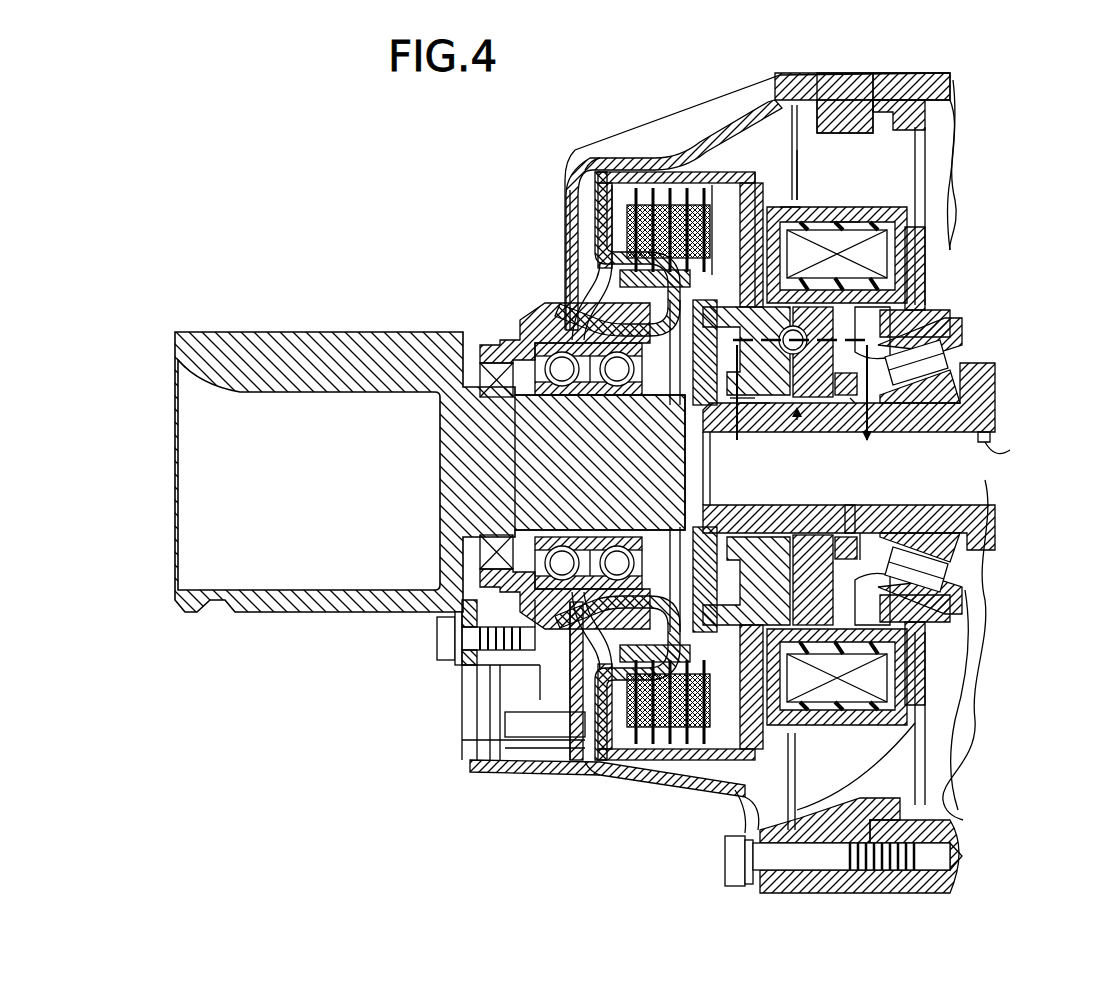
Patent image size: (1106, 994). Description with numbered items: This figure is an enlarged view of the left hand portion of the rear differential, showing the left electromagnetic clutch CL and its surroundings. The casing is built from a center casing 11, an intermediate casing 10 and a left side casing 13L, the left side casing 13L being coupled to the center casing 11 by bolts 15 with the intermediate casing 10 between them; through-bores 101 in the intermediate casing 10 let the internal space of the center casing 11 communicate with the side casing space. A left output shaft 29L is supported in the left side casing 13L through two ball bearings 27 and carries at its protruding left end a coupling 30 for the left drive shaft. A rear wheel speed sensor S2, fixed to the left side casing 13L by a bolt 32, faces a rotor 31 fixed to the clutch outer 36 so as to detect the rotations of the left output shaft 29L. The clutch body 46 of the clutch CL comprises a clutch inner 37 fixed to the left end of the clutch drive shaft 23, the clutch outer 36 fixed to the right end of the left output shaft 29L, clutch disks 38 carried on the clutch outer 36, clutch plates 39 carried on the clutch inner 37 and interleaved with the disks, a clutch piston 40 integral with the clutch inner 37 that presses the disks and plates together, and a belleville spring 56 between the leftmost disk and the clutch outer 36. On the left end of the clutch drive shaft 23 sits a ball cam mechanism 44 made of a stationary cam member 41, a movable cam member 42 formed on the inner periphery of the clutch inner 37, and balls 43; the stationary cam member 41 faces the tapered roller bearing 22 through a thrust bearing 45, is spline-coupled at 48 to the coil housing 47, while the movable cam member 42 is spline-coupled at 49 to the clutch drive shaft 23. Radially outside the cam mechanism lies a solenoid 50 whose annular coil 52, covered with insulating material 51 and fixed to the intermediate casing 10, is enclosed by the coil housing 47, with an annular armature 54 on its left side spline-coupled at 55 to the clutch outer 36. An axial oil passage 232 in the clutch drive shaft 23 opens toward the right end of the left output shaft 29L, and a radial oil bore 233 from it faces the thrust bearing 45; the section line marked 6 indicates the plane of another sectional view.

The coupling 30 is at (333, 333).
The left output shaft 29L is at (590, 479).
The ball bearing 27 is at (540, 325).
The clutch inner 37 is at (640, 268).
The clutch plate 39 is at (706, 292).
The left side casing 13L is at (690, 100).
The intermediate casing 10 is at (840, 75).
The center casing 11 is at (903, 85).
The through-bore 101 is at (935, 220).
The armature 54 is at (768, 200).
The spline coupling 55 is at (740, 182).
The clutch piston 40 is at (714, 183).
The clutch outer 36 is at (636, 185).
The clutch disk 38 is at (653, 250).
The clutch body 46 is at (622, 172).
The left electromagnetic clutch CL is at (598, 166).
The belleville spring 56 is at (578, 185).
The coil housing 47 is at (886, 212).
The spline coupling 48 is at (805, 265).
The solenoid 50 is at (815, 160).
The insulating material 51 is at (815, 205).
The coil 52 is at (845, 235).
The ball 43 is at (793, 326).
The tapered roller bearing 22 is at (930, 398).
The clutch drive shaft 23 is at (1000, 430).
The oil passage 232 is at (1000, 442).
The oil bore 233 is at (852, 505).
The thrust bearing 45 is at (880, 540).
The stationary cam member 41 is at (832, 400).
The ball cam mechanism 44 is at (797, 425).
The spline coupling 49 is at (783, 405).
The movable cam member 42 is at (756, 432).
The section line 6- 6 is at (805, 413).
The bolt 32 is at (445, 640).
The rear wheel speed sensor S2 is at (552, 740).
The rotor 31 is at (592, 748).
The bolt 15 is at (728, 862).